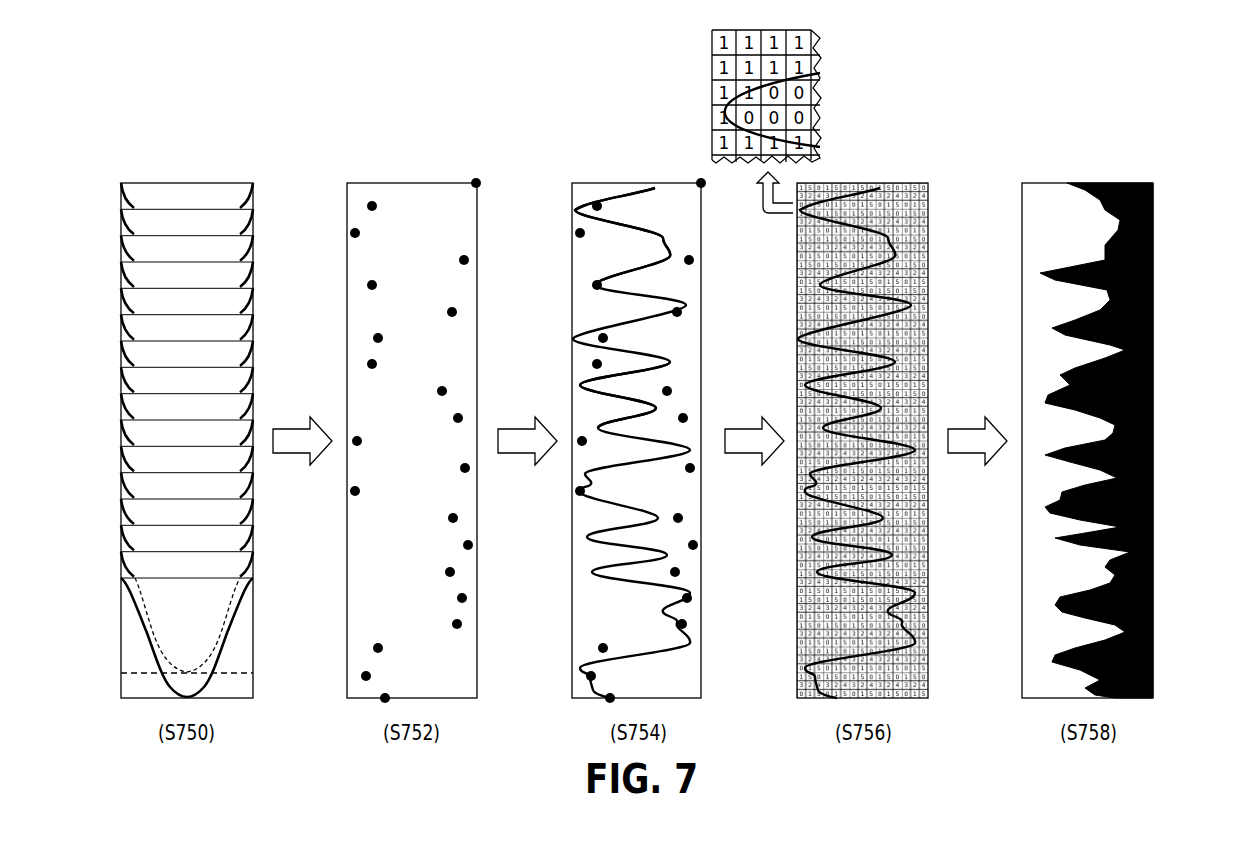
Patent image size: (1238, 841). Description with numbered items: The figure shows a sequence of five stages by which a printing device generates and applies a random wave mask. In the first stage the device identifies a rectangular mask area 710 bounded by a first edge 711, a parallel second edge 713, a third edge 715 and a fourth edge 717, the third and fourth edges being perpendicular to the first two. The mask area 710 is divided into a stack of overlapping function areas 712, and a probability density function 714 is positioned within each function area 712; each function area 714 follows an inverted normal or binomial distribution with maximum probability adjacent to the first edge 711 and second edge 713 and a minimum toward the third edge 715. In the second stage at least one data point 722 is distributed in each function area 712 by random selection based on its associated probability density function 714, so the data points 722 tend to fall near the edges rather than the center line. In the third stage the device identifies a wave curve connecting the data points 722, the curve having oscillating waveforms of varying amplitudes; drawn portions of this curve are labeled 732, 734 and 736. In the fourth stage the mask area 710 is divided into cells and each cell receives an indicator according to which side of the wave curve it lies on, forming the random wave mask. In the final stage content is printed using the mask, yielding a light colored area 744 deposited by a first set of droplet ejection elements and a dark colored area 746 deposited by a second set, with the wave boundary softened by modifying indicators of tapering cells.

The mask area 710 is at (207, 172).
The first edge 711 is at (253, 400).
The function areas 712 is at (247, 542).
The second edge 713 is at (121, 402).
The probability density functions 714 is at (132, 542).
The third edge 715 is at (215, 699).
The fourth edge 717 is at (172, 182).
The data point 722 is at (469, 260).
The lower curve segment 732 is at (592, 393).
The upper curve segment 734 is at (592, 311).
The fitted boundary curve 736 is at (680, 338).
The light colored area 744 is at (1050, 238).
The dark colored area 746 is at (1153, 235).